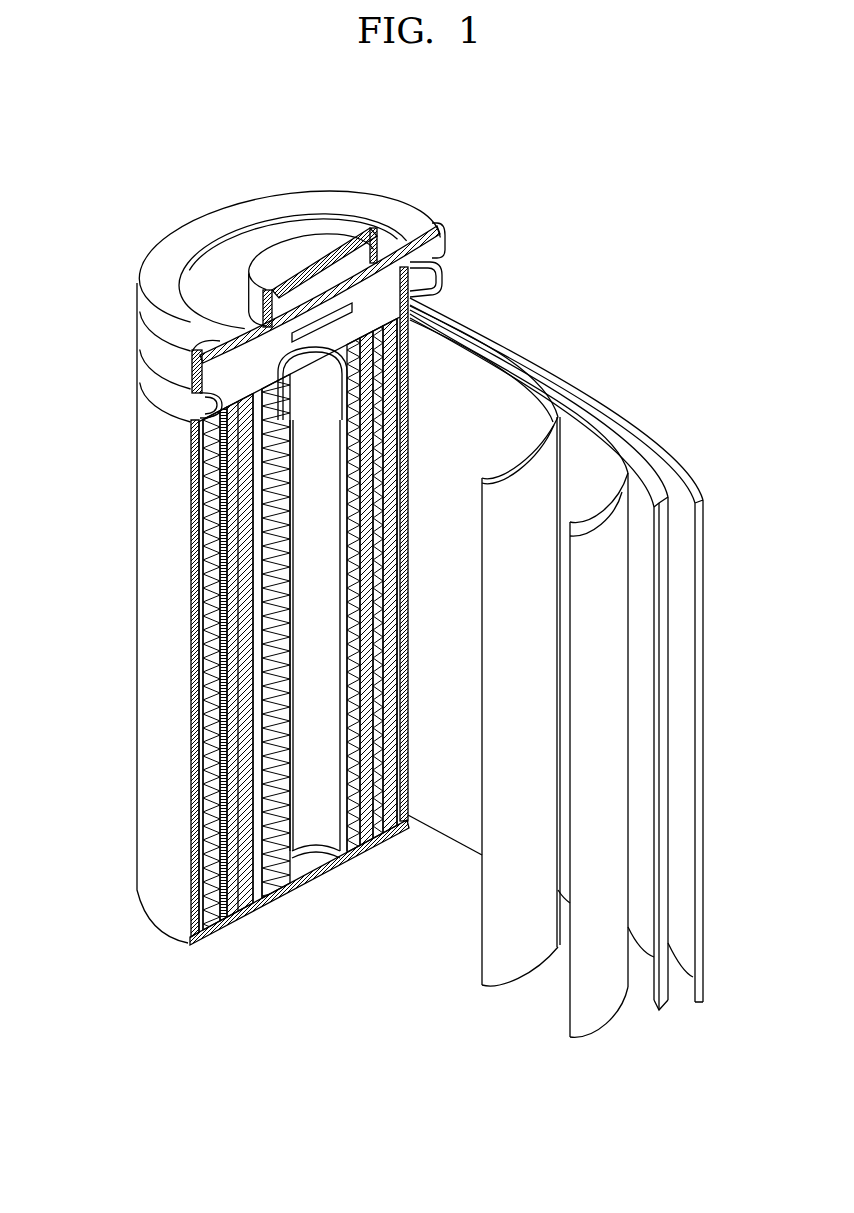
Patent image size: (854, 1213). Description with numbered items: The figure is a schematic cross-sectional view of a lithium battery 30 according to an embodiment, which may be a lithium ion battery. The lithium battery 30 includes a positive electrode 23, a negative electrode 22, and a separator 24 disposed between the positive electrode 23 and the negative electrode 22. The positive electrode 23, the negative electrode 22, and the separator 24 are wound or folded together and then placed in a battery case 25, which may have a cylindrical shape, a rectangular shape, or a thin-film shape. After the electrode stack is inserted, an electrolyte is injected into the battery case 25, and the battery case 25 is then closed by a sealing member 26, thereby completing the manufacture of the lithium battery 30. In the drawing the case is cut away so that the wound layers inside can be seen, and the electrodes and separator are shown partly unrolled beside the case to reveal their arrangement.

The lithium battery 30 is at (469, 163).
The battery case 25 is at (150, 641).
The sealing member 26 is at (263, 247).
The negative electrode 22 is at (698, 477).
The positive electrode 23 is at (587, 422).
The separator 24 is at (657, 447).